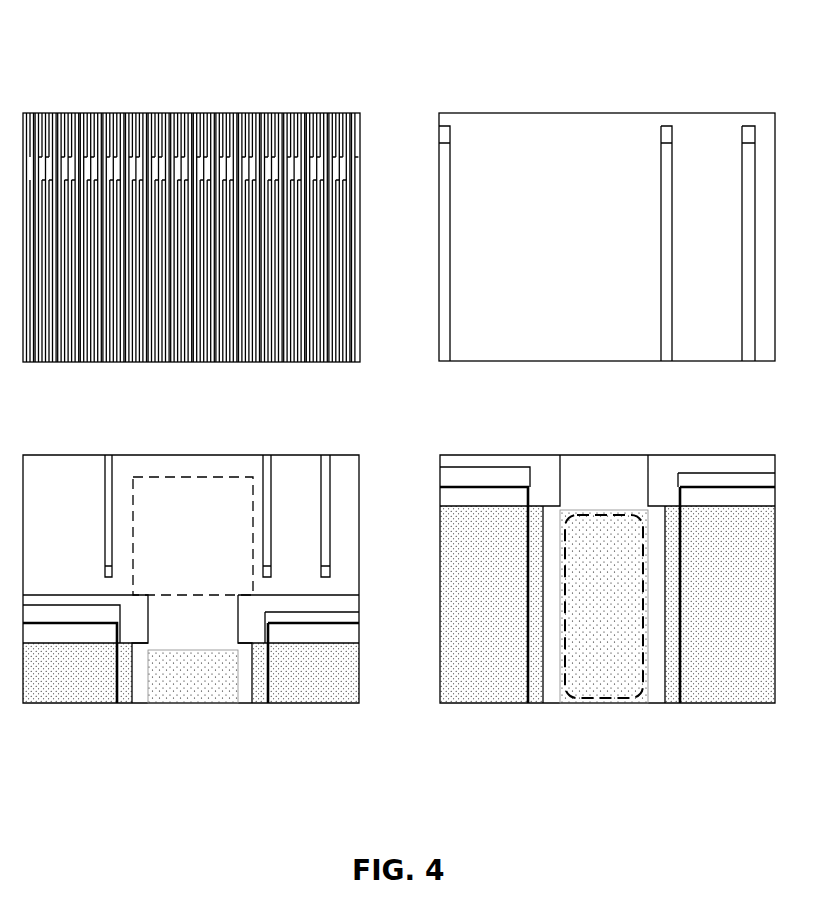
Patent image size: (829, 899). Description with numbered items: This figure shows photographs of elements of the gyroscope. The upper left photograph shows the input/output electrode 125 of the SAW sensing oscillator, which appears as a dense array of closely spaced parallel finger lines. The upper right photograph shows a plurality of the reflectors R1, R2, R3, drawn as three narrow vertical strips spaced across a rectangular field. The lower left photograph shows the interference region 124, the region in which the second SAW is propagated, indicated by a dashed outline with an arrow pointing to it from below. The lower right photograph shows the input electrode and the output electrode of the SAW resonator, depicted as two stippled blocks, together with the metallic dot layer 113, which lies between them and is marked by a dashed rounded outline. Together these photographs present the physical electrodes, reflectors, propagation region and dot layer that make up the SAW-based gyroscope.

The input/output electrode 125 is at (272, 114).
The reflector R1 is at (443, 128).
The reflector R2 is at (665, 128).
The reflector R3 is at (746, 128).
The interference region 124 is at (193, 595).
The metallic dot layer 113 is at (612, 510).